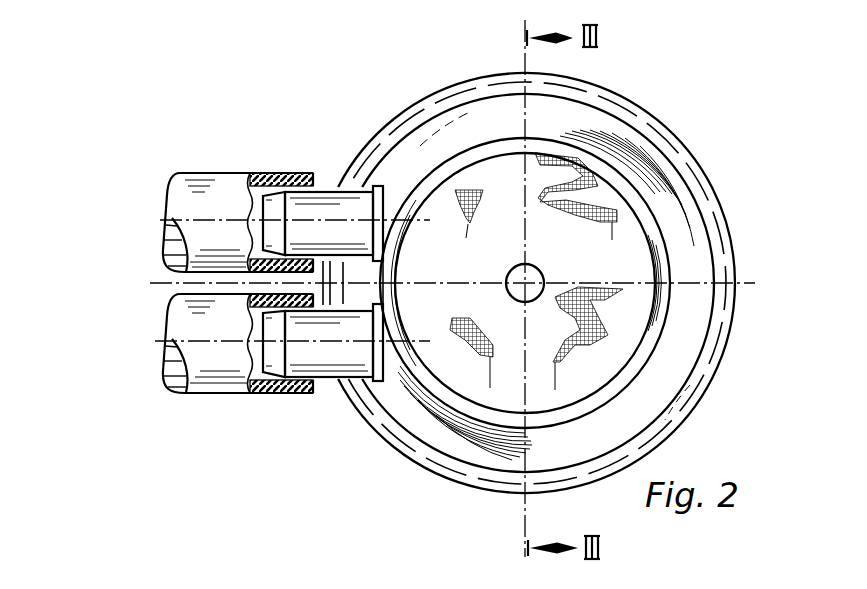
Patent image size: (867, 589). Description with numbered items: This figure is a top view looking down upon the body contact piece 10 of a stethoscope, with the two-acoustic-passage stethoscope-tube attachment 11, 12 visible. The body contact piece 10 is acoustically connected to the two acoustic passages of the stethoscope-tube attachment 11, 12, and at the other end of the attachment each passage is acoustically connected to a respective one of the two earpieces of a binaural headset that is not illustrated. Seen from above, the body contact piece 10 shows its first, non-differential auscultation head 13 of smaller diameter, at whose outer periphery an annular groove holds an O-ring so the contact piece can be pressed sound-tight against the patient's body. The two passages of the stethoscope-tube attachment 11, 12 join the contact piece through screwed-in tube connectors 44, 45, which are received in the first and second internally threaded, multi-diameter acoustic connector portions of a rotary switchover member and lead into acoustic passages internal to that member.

The body contact piece 10 is at (336, 117).
The stethoscope-tube attachment 11 is at (227, 190).
The stethoscope-tube attachment 12 is at (231, 388).
The first auscultation head 13 is at (597, 260).
The tube connector 44 is at (326, 190).
The tube connector 45 is at (339, 372).